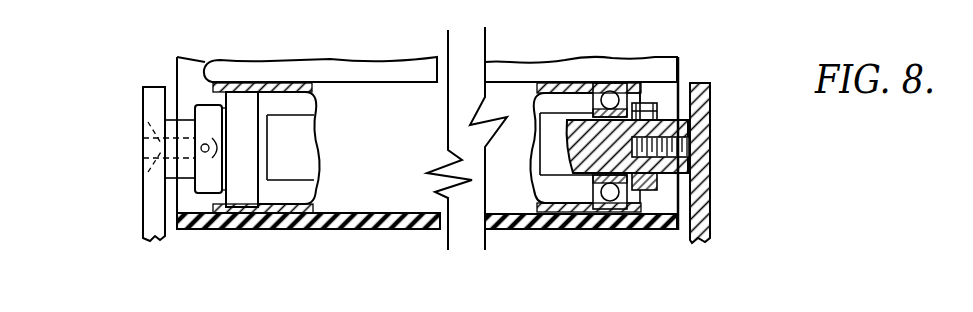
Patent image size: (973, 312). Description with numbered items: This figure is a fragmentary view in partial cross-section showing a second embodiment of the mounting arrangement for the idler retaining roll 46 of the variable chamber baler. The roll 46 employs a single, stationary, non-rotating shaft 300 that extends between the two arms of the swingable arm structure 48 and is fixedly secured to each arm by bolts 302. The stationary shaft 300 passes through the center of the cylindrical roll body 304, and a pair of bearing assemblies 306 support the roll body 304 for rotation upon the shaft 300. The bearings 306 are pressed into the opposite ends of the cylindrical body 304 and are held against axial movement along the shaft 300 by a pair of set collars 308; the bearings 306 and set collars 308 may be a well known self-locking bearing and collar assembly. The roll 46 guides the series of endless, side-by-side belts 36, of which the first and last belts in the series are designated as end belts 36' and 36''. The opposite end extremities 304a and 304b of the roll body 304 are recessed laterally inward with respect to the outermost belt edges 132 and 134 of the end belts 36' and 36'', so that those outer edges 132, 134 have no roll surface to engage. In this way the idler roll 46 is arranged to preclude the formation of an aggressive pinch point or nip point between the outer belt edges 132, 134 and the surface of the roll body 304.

The endless belts 36 is at (427, 257).
The first end belt 36' is at (328, 38).
The last end belt 36'' is at (581, 43).
The retaining roll 46 is at (516, 82).
The swingable arm structure 48 is at (143, 217).
The outer edge of end belt 132 is at (176, 60).
The outer edge of end belt 134 is at (680, 62).
The stationary shaft 300 is at (295, 147).
The bolts 302 is at (153, 143).
The cylindrical roll body 304 is at (380, 100).
The end extremity of roll body 304a is at (207, 66).
The end extremity of roll body 304b is at (641, 80).
The bearing assemblies 306 is at (247, 197).
The set collars 308 is at (200, 183).